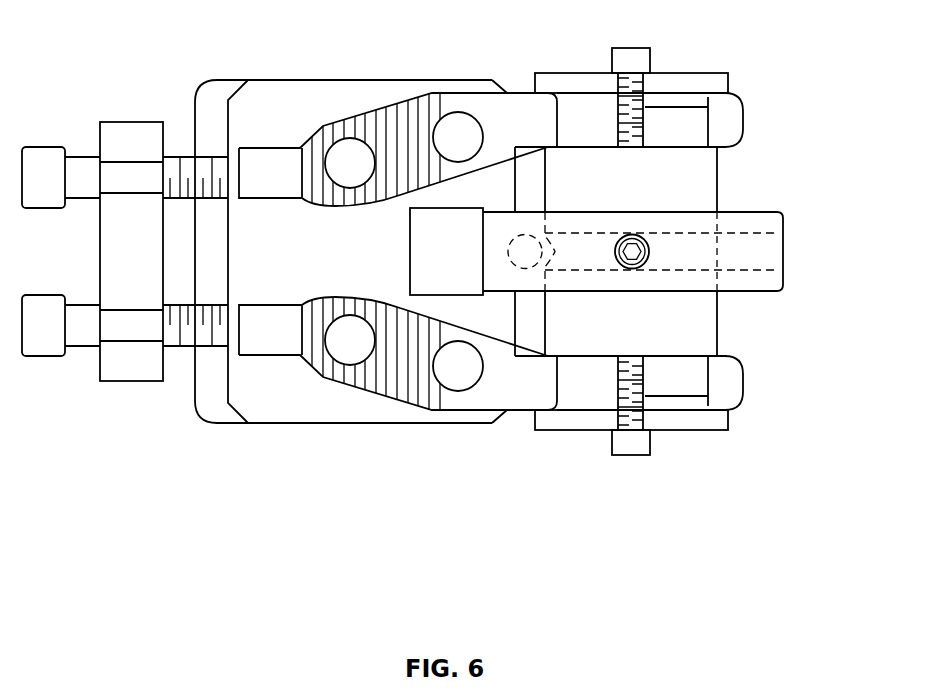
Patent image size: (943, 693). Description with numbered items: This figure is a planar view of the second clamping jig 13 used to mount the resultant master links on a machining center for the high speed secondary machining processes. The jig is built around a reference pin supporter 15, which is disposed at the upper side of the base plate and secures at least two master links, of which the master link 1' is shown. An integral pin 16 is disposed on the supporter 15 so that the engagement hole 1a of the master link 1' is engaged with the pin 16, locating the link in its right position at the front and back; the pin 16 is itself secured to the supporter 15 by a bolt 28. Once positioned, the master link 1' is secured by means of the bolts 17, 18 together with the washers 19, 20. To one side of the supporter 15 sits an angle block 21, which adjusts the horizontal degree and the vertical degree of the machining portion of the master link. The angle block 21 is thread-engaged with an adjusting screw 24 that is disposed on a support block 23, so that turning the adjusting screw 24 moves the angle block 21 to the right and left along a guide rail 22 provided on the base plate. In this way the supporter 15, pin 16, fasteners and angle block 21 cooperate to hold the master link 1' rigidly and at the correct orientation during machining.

The second clamping jig 13 is at (782, 205).
The reference pin supporter 15 is at (763, 222).
The integral pin 16 is at (700, 328).
The bolt 17 is at (635, 447).
The bolt 18 is at (640, 60).
The washer 19 is at (700, 420).
The washer 20 is at (705, 83).
The angle block 21 is at (300, 103).
The guide rail 22 is at (212, 405).
The support block 23 is at (135, 138).
The adjusting screw 24 is at (80, 165).
The bolt 28 is at (633, 234).
The master link 1' is at (398, 251).
The engagement hole 1a is at (580, 100).